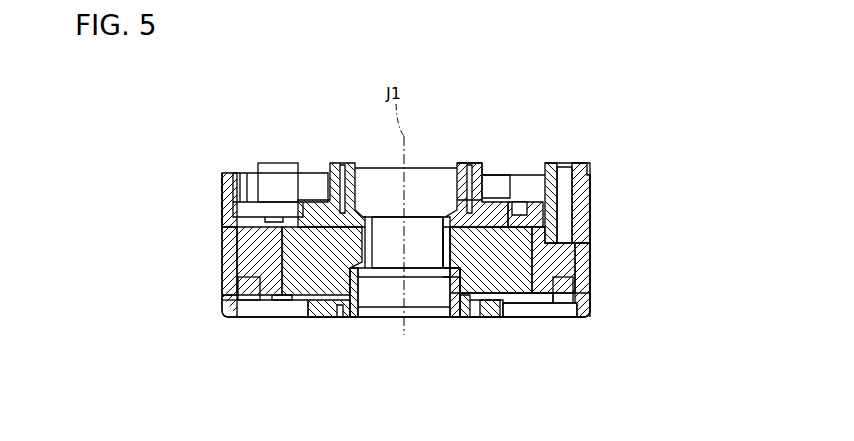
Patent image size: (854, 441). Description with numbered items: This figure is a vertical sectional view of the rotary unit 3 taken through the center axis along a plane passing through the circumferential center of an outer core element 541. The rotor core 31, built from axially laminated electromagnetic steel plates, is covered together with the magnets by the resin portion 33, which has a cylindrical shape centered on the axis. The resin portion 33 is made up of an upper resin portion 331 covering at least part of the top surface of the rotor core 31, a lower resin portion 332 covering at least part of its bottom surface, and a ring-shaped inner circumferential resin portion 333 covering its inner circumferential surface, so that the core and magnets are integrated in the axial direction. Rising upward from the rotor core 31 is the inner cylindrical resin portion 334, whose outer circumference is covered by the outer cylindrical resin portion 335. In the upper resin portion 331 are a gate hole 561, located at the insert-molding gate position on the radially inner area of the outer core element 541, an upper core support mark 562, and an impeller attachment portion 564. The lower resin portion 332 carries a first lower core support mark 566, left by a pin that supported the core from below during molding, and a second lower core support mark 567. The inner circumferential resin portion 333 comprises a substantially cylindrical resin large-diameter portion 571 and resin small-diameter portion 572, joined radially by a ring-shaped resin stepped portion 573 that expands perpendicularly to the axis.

The rotary unit 3 is at (244, 126).
The rotor core 31 is at (297, 278).
The resin portion 33 is at (606, 158).
The upper resin portion 331 is at (317, 200).
The lower resin portion 332 is at (326, 305).
The inner circumferential resin portion 333 is at (383, 218).
The inner cylindrical resin portion 334 is at (456, 185).
The outer cylindrical resin portion 335 is at (478, 195).
The outer core element 541 is at (584, 258).
The gate hole 561 is at (493, 176).
The upper core support mark 562 is at (530, 216).
The impeller attachment portion 564 is at (577, 167).
The first lower core support mark 566 is at (487, 314).
The second lower core support mark 567 is at (523, 306).
The resin large-diameter portion 571 is at (458, 275).
The resin small-diameter portion 572 is at (443, 252).
The resin stepped portion 573 is at (450, 268).